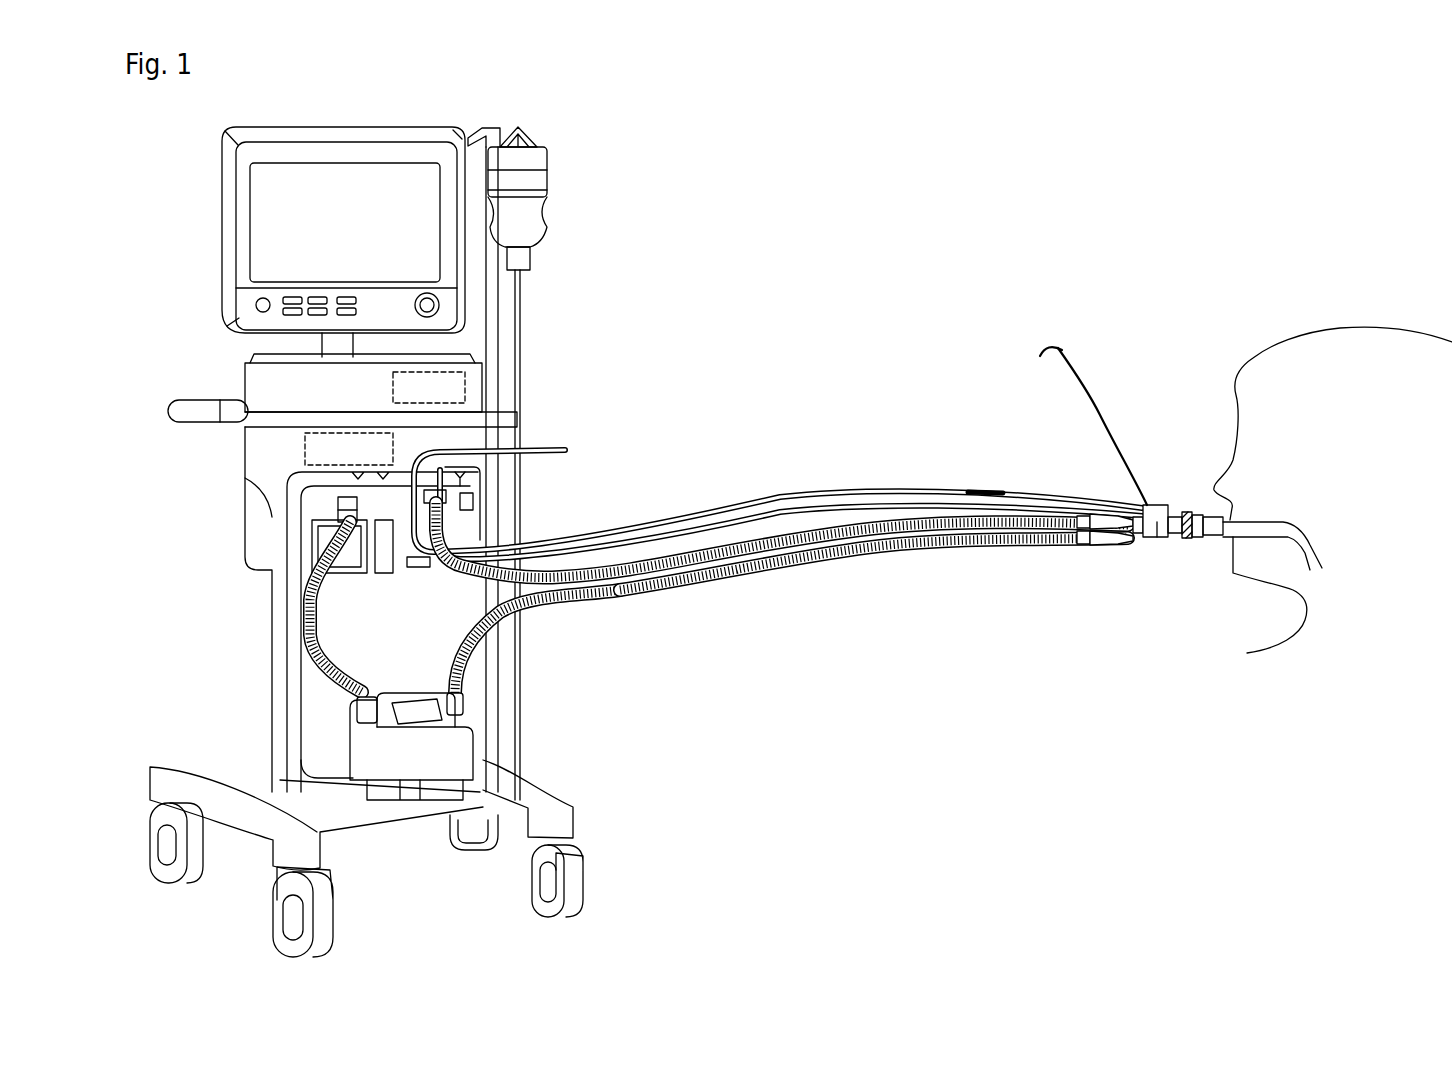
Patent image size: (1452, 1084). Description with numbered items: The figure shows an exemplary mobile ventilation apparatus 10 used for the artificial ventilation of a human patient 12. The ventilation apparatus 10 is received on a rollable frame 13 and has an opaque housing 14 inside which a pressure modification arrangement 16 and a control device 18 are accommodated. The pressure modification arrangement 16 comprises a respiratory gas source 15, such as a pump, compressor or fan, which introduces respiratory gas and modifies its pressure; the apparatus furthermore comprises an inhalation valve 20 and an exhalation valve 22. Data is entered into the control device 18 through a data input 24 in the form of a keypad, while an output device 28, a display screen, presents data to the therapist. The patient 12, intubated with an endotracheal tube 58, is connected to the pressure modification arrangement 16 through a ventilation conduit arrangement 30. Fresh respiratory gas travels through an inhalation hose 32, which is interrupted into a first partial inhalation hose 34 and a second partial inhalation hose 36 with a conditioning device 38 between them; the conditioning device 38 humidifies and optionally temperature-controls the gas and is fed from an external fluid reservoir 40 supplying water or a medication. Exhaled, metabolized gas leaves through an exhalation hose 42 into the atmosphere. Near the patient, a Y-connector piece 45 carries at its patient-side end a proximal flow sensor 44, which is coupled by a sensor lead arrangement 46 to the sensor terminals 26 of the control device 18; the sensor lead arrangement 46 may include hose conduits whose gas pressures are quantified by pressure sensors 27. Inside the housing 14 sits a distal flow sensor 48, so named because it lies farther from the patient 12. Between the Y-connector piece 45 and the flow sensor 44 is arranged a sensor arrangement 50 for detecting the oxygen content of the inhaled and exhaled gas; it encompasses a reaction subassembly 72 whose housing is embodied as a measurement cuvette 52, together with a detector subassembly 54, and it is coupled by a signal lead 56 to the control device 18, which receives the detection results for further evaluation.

The ventilation apparatus 10 is at (424, 459).
The patient 12 is at (1266, 363).
The rollable frame 13 is at (560, 826).
The housing 14 is at (195, 370).
The respiratory gas source 15 is at (175, 609).
The pressure modification arrangement 16 is at (265, 443).
The control device 18 is at (453, 388).
The inhalation valve 20 is at (340, 483).
The exhalation valve 22 is at (430, 490).
The data input 24 is at (262, 303).
The sensor terminals 26 is at (791, 496).
The pressure sensors 27 is at (470, 455).
The output device 28 is at (295, 210).
The ventilation conduit arrangement 30 is at (805, 600).
The inhalation hose 32 is at (492, 670).
The first partial inhalation hose 34 is at (290, 630).
The second partial inhalation hose 36 is at (573, 600).
The conditioning device 38 is at (417, 773).
The external fluid reservoir 40 is at (533, 160).
The exhalation hose 42 is at (695, 568).
The proximal flow sensor 44 is at (1188, 492).
The Y-connector piece 45 is at (1138, 552).
The sensor lead arrangement 46 is at (778, 480).
The distal flow sensor 48 is at (349, 449).
The sensor arrangement 50 is at (1153, 492).
The measurement cuvette 52 is at (1226, 568).
The detector subassembly 54 is at (1157, 537).
The signal lead 56 is at (1072, 366).
The endotracheal tube 58 is at (1290, 522).
The reaction subassembly 72 is at (1178, 540).